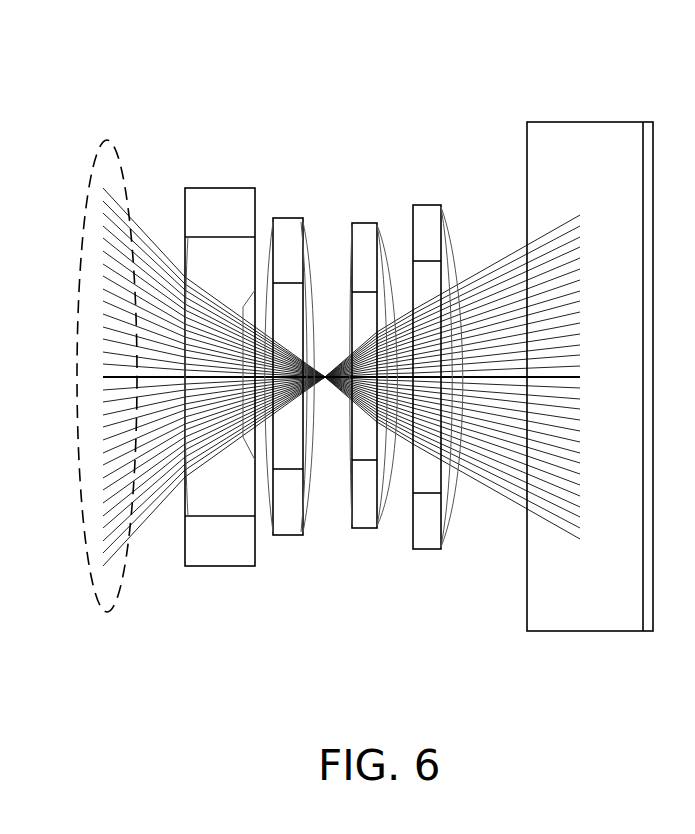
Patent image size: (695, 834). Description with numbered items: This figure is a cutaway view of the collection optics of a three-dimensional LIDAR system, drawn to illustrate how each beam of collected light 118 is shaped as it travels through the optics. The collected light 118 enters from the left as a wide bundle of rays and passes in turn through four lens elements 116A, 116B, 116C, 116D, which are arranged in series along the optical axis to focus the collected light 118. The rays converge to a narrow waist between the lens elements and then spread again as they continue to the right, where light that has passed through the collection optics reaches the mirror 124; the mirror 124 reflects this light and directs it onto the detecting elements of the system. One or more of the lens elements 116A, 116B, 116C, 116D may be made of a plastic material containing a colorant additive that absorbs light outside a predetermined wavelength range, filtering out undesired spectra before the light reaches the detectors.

The collected light 118 is at (92, 187).
The lens element 116A is at (220, 188).
The lens element 116B is at (287, 218).
The lens element 116C is at (360, 223).
The lens element 116D is at (415, 205).
The mirror 124 is at (577, 122).